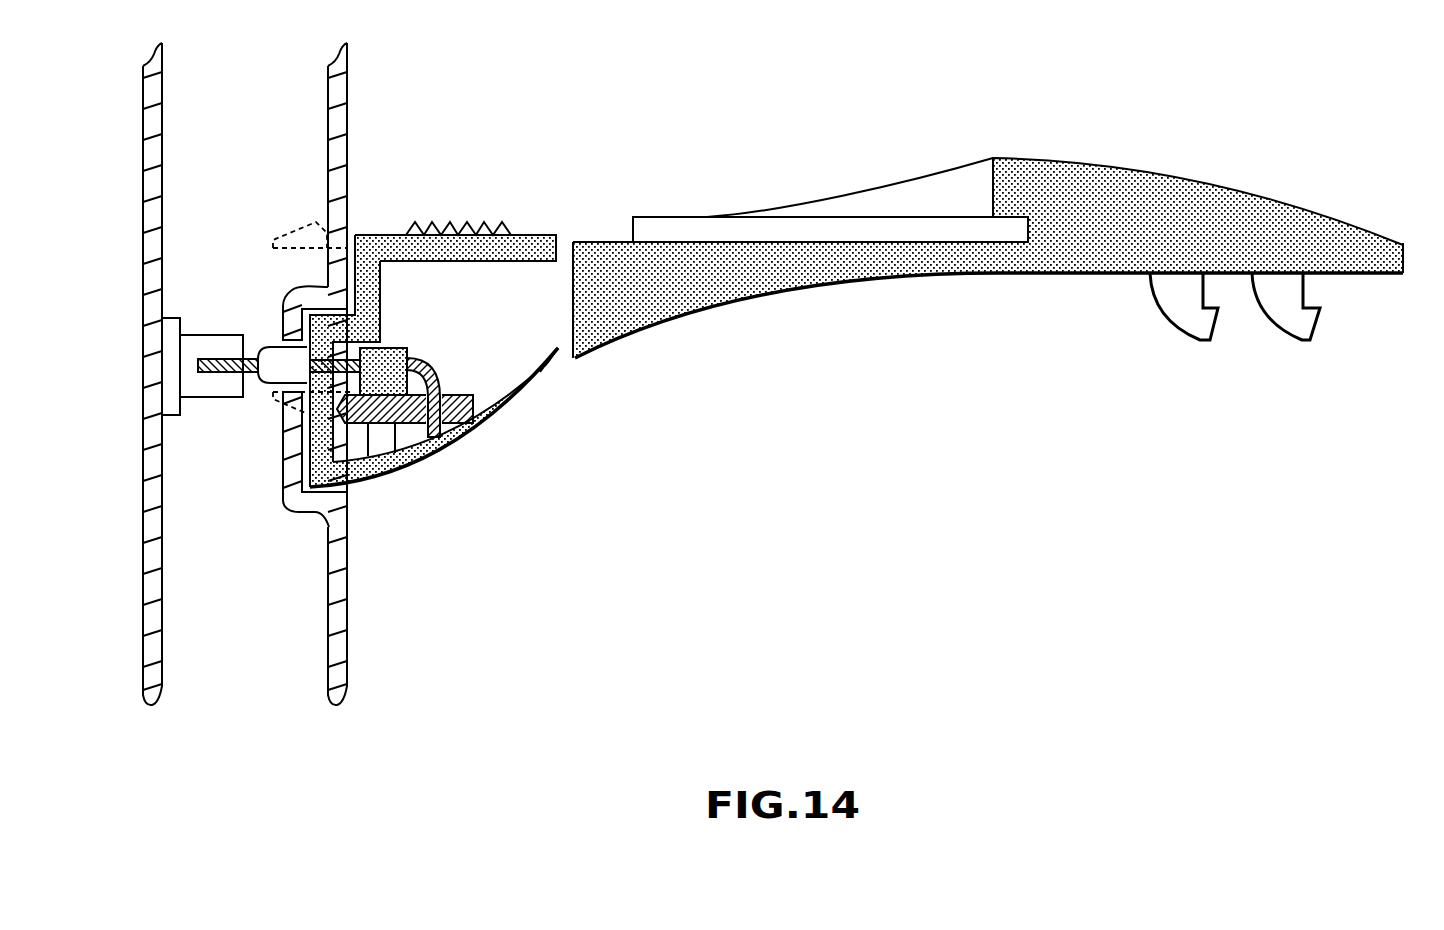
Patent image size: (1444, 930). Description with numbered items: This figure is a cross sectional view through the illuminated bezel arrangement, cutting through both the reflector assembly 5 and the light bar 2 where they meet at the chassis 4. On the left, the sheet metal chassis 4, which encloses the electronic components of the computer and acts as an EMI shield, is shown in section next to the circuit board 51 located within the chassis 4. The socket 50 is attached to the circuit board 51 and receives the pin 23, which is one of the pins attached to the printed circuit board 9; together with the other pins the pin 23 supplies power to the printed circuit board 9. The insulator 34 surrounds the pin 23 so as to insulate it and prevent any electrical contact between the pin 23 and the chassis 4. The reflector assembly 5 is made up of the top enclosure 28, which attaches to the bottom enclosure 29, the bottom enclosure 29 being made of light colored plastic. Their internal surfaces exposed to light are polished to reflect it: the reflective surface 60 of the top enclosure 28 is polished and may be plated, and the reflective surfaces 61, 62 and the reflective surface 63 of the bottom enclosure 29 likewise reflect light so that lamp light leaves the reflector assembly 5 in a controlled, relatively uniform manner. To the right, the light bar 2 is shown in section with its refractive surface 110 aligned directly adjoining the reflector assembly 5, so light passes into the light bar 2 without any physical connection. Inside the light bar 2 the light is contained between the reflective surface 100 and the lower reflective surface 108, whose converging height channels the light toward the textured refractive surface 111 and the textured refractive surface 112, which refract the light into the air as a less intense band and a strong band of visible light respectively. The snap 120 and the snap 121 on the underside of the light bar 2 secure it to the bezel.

The light bar 2 is at (908, 277).
The chassis 4 is at (328, 96).
The reflector assembly 5 is at (470, 484).
The printed circuit board 9 is at (489, 443).
The pin 23 is at (425, 363).
The top enclosure 28 is at (398, 235).
The bottom enclosure 29 is at (392, 481).
The insulator 34 is at (275, 383).
The socket 50 is at (213, 335).
The circuit board 51 is at (162, 136).
The reflective surface 60 is at (500, 267).
The reflective surface 61 is at (384, 292).
The reflective surface 62 is at (342, 432).
The reflective surface 63 is at (508, 388).
The reflective surface 100 is at (707, 233).
The lower reflective surface 108 is at (748, 295).
The refractive surface 110 is at (568, 282).
The refractive surface 111 is at (1182, 170).
The refractive surface 112 is at (1407, 253).
The snap 120 is at (1165, 318).
The snap 121 is at (1290, 338).